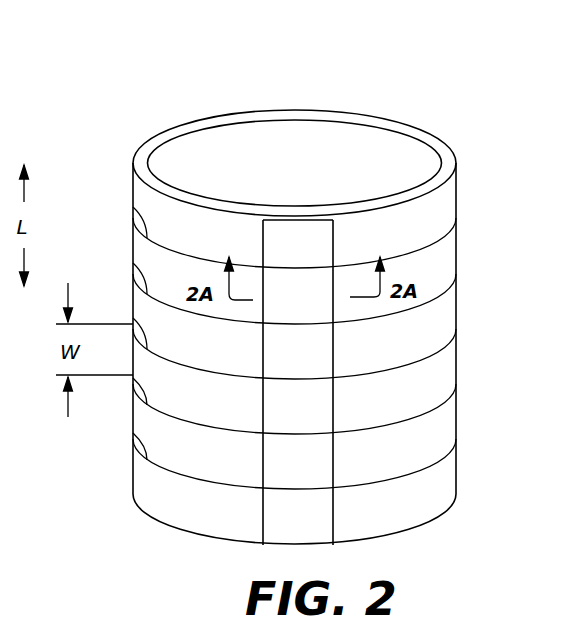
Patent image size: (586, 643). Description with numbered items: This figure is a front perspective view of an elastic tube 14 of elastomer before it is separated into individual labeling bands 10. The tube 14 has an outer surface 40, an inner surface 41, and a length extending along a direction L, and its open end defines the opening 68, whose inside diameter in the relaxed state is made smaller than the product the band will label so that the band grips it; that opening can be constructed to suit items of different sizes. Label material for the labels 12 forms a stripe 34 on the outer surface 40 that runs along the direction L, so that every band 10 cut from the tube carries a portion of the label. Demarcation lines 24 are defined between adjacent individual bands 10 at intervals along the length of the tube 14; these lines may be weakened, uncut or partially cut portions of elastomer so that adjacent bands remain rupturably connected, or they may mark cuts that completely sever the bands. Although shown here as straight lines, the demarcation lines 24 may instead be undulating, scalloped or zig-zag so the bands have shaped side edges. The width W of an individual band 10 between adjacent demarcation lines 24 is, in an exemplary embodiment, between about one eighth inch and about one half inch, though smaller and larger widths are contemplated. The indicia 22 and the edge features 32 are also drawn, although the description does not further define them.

The labeling band 10 is at (445, 206).
The label 12 is at (338, 255).
The elastic tube 14 is at (455, 143).
The indicia 22 is at (280, 507).
The demarcation line 24 is at (133, 206).
The outer edge 32 is at (164, 133).
The stripe 34 is at (284, 218).
The outer surface 40 is at (432, 218).
The inner surface 41 is at (403, 167).
The opening 68 is at (305, 157).